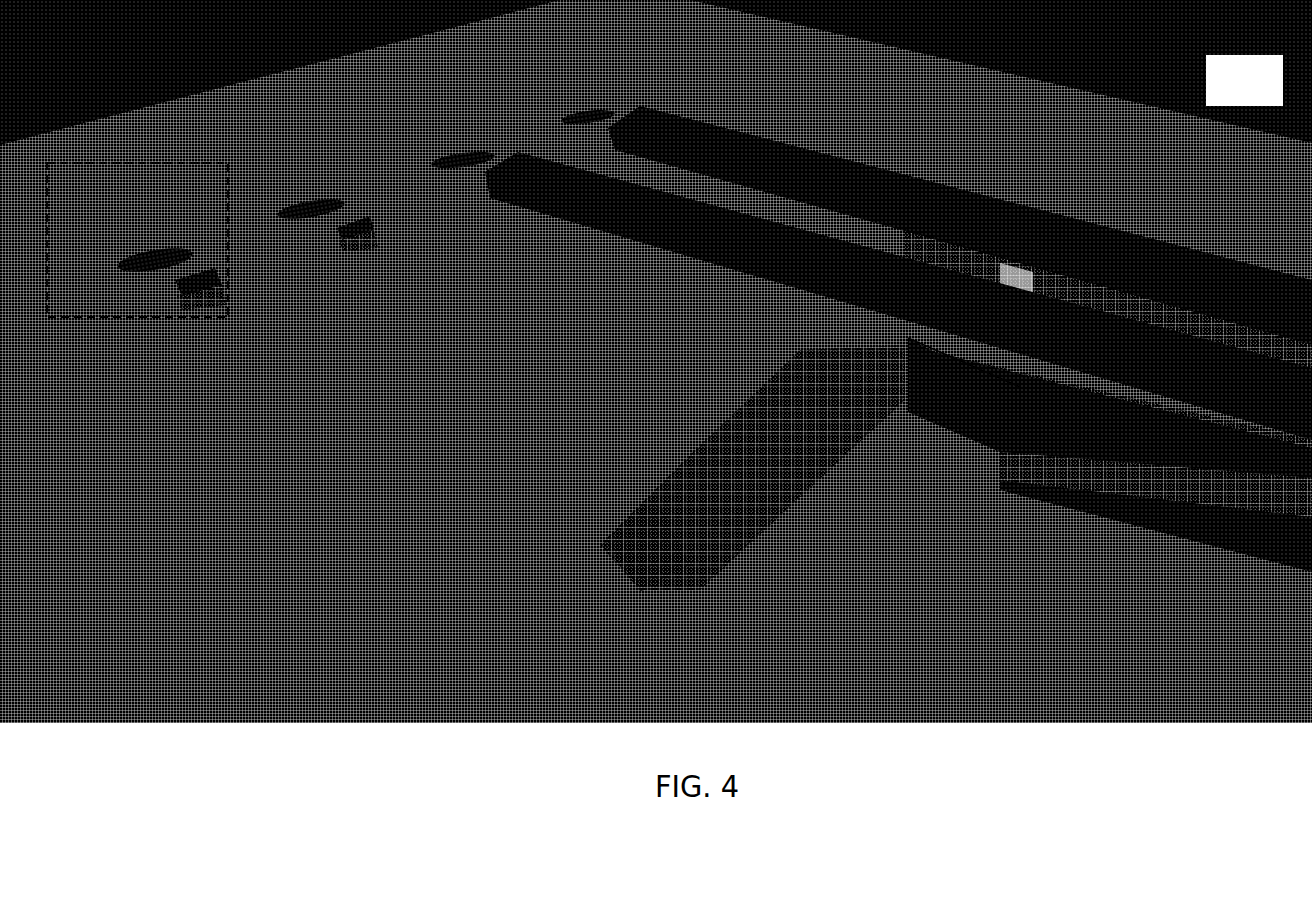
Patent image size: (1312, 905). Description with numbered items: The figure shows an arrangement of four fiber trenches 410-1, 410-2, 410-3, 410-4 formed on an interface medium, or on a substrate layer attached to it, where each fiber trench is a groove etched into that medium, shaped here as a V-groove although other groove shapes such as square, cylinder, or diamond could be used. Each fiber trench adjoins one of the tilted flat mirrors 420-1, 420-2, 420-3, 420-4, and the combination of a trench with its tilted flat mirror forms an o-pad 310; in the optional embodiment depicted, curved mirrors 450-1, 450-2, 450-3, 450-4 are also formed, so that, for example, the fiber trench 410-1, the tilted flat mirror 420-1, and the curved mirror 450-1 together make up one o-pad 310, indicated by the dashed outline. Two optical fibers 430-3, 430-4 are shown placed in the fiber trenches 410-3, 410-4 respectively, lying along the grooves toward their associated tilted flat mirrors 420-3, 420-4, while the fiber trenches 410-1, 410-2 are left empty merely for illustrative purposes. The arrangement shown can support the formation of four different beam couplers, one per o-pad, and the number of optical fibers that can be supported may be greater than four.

The o-pad 310 is at (200, 163).
The curved mirror 450-1 is at (132, 250).
The curved mirror 450-2 is at (293, 195).
The curved mirror 450-3 is at (443, 155).
The curved mirror 450-4 is at (562, 113).
The tilted flat mirror 420-1 is at (217, 265).
The tilted flat mirror 420-2 is at (368, 217).
The tilted flat mirror 420-3 is at (505, 162).
The tilted flat mirror 420-4 is at (628, 118).
The optical fiber 430-3 is at (648, 236).
The optical fiber 430-4 is at (768, 158).
The fiber trench 410-1 is at (638, 523).
The fiber trench 410-2 is at (798, 440).
The fiber trench 410-3 is at (922, 416).
The fiber trench 410-4 is at (1043, 260).